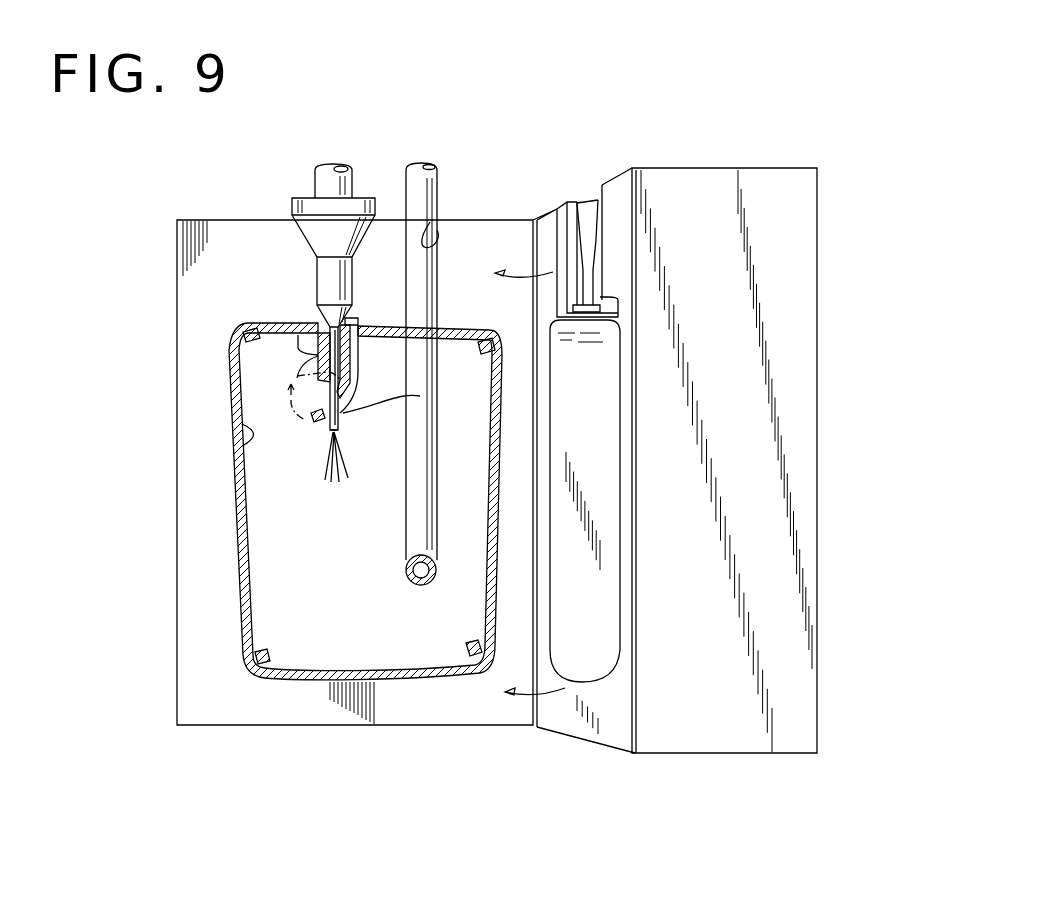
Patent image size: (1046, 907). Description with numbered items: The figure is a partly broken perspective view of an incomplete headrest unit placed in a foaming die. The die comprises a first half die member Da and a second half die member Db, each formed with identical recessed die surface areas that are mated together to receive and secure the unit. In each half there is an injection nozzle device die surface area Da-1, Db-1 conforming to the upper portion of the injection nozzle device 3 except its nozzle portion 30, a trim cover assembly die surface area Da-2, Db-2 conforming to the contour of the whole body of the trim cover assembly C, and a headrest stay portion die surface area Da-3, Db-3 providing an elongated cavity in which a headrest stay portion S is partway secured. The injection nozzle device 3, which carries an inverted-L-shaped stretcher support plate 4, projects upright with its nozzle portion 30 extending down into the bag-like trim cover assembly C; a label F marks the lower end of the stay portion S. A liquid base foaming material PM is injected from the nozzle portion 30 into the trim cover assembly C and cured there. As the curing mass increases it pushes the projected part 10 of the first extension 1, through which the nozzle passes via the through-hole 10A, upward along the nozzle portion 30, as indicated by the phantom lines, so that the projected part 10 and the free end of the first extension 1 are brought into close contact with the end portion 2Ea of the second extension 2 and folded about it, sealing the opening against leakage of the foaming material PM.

The first extension 1 is at (358, 378).
The second extension 2 is at (303, 347).
The end portion of second extension 2Ea is at (300, 375).
The injection nozzle device 3 is at (315, 183).
The stretcher support plate 4 is at (362, 320).
The projected part 10 is at (288, 378).
The through-hole 10A is at (420, 396).
The nozzle portion 30 is at (348, 422).
The headrest stay portion S is at (406, 190).
The suction pipe end F is at (408, 510).
The trim cover assembly C is at (227, 495).
The liquid base foaming material PM is at (330, 462).
The first half die member Da is at (177, 302).
The injection nozzle device die surface area Da-1 is at (317, 257).
The trim cover assembly die surface area Da-2 is at (242, 432).
The headrest stay portion die surface area Da-3 is at (430, 222).
The second half die member Db is at (817, 328).
The injection nozzle device die surface area Db-1 is at (596, 208).
The trim cover assembly die surface area Db-2 is at (612, 556).
The headrest stay portion die surface area Db-3 is at (560, 226).